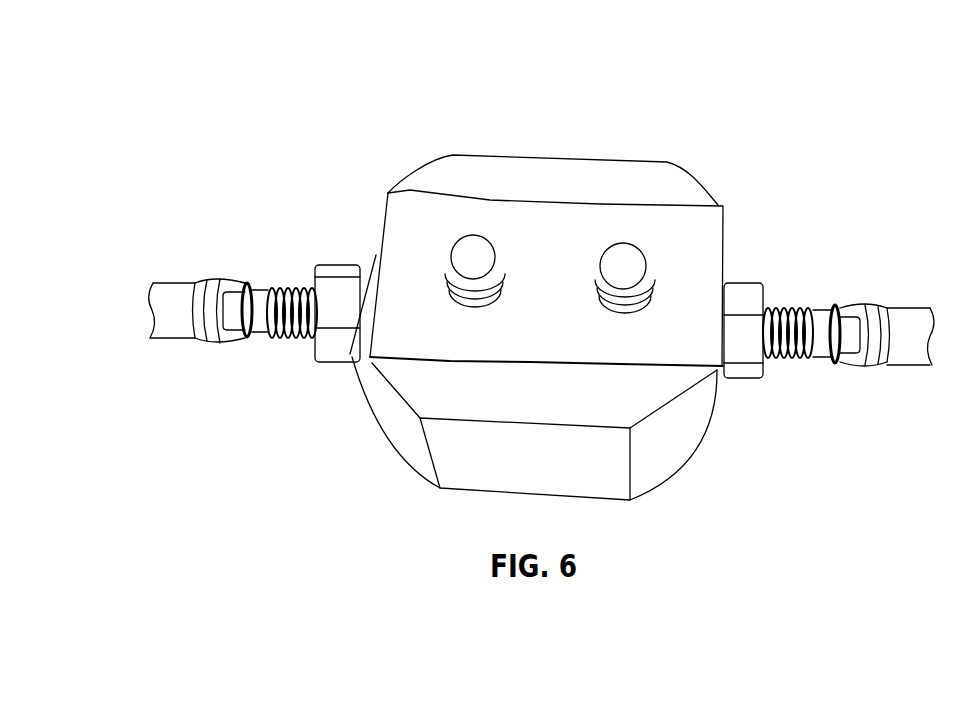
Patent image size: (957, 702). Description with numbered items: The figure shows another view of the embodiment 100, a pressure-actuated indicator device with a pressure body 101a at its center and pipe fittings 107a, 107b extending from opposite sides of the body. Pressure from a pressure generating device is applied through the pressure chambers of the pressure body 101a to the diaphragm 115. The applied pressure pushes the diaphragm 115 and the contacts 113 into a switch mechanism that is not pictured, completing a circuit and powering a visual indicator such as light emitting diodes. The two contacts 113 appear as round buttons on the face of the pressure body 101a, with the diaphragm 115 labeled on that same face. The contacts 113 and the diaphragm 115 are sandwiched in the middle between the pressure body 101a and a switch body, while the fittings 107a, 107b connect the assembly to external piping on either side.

The embodiment 100 is at (135, 78).
The pressure body 101a is at (357, 197).
The contacts 113 is at (623, 239).
The diaphragm 115 is at (560, 327).
The inlet pipe fitting 107a is at (175, 357).
The outlet pipe fitting 107b is at (900, 377).